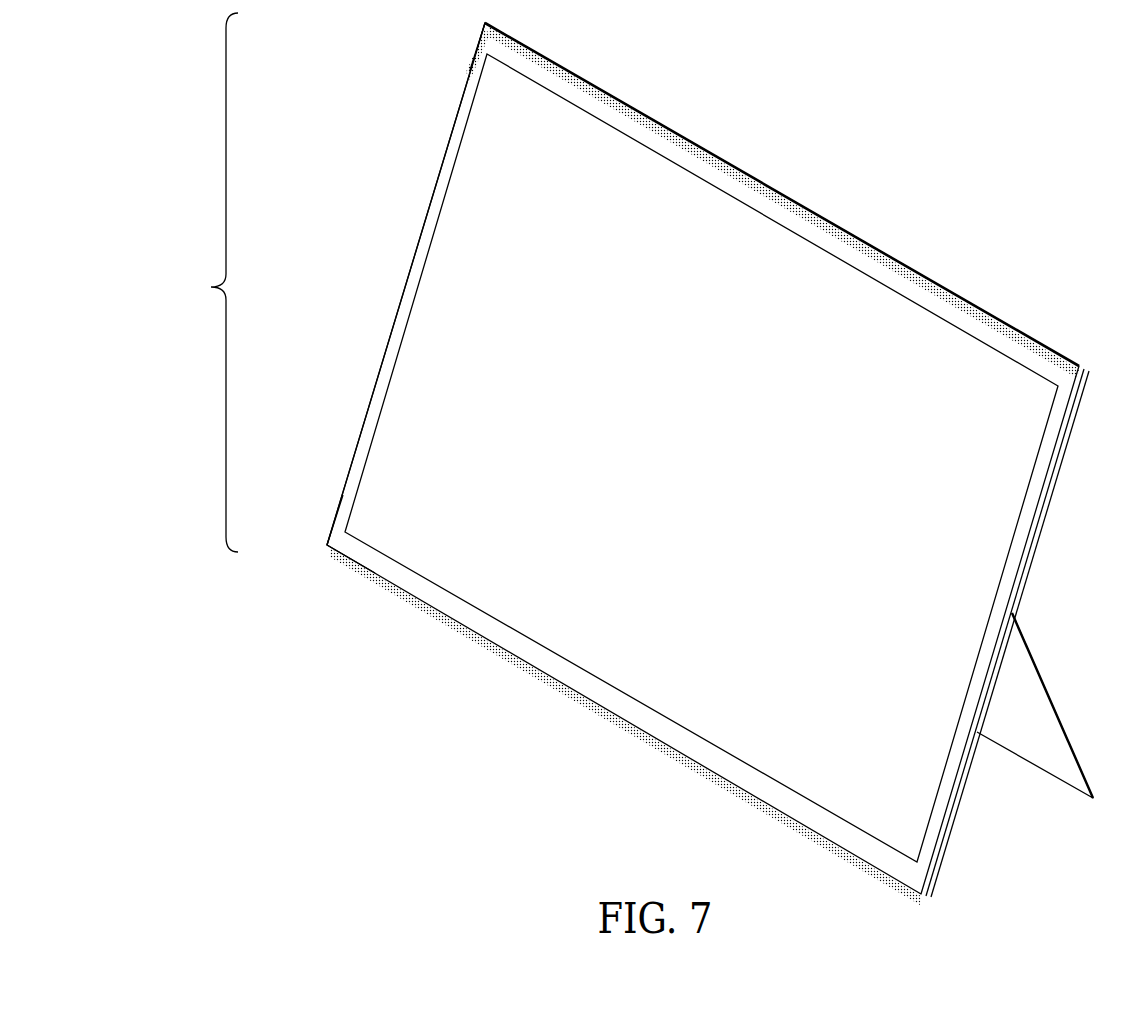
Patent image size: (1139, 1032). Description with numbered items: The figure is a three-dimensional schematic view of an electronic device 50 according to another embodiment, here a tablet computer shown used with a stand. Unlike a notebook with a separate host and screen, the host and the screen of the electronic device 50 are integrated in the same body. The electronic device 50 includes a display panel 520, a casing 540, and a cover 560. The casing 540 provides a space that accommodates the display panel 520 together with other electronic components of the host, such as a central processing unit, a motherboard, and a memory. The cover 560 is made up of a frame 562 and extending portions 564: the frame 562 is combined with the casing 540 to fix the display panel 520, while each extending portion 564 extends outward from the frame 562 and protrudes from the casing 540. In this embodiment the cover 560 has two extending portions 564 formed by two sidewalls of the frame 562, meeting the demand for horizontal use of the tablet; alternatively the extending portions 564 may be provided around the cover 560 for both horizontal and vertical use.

The electronic device 50 is at (972, 180).
The display panel 520 is at (992, 506).
The casing 540 is at (1028, 558).
The cover 560 is at (203, 282).
The frame 562 is at (420, 258).
The extending portion 564 is at (482, 25).